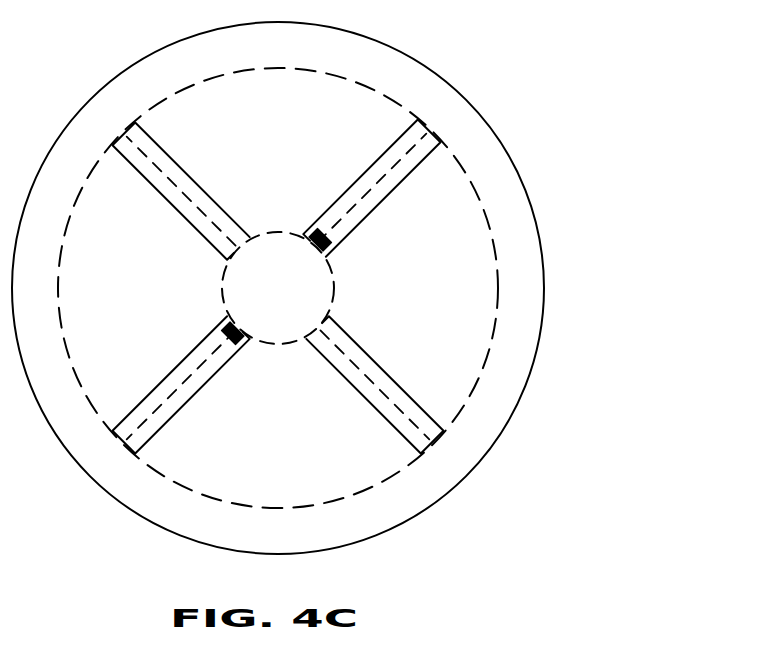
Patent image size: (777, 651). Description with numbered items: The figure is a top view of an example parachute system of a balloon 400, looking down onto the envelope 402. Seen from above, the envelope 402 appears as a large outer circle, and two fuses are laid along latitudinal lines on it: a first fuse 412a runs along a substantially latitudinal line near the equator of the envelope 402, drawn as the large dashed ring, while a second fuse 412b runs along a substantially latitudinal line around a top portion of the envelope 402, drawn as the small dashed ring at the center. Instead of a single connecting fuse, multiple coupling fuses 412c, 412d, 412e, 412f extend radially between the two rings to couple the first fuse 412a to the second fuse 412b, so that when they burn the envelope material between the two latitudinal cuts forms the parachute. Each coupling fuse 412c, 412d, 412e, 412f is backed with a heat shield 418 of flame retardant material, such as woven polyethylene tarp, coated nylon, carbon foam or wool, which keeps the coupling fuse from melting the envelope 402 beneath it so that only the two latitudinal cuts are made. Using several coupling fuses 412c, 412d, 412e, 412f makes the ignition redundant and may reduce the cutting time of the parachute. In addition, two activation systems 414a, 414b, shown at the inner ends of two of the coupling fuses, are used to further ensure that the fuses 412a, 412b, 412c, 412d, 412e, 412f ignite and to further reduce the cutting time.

The balloon 400 is at (329, 288).
The envelope 402 is at (515, 277).
The first fuse 412a is at (402, 107).
The second fuse 412b is at (268, 232).
The coupling fuse 412c is at (371, 193).
The coupling fuse 412d is at (386, 391).
The coupling fuse 412e is at (143, 421).
The coupling fuse 412f is at (162, 166).
The activation system 414a is at (334, 245).
The activation system 414b is at (243, 342).
The heat shield 418 is at (373, 208).